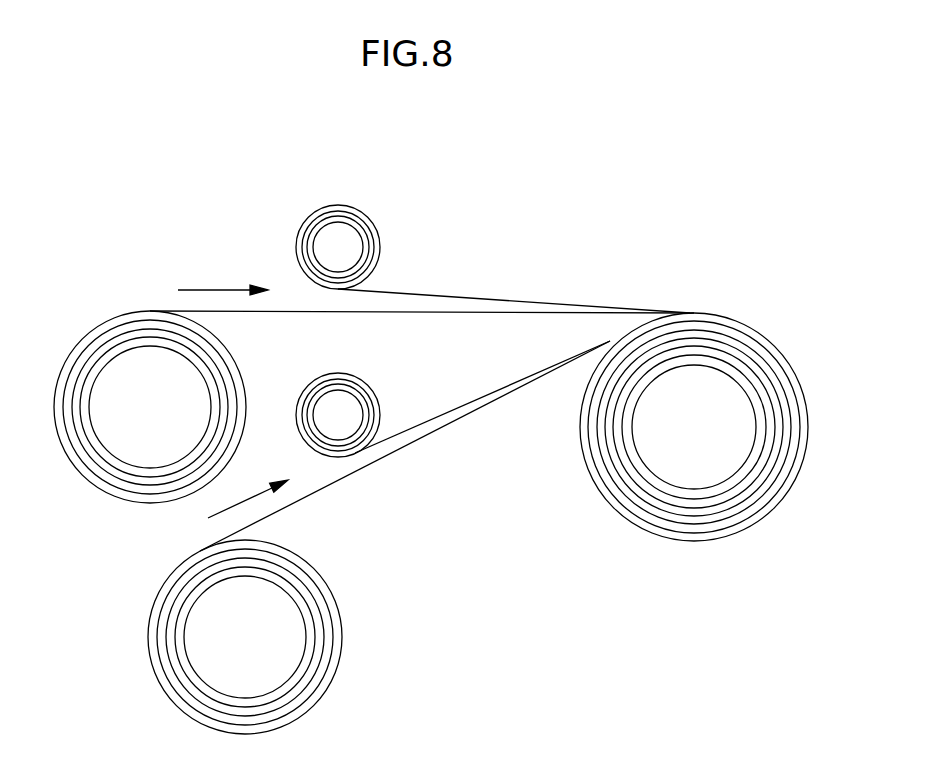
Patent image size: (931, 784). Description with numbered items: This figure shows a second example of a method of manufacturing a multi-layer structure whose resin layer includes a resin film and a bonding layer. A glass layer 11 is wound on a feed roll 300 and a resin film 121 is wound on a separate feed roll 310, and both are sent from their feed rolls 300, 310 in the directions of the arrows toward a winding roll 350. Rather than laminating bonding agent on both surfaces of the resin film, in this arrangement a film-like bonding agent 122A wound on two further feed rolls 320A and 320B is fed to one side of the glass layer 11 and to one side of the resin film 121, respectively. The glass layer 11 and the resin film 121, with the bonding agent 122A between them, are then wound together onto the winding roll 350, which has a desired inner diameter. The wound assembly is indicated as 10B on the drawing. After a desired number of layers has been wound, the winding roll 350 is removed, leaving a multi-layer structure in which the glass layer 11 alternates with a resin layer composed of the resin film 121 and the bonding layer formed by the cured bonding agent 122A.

The feed roll 300 is at (120, 433).
The feed roll 310 is at (226, 664).
The feed roll 320A is at (338, 238).
The feed roll 320B is at (338, 408).
The winding roll 350 is at (691, 465).
The electrode assembly 10B is at (592, 495).
The glass layer 11 is at (265, 313).
The resin film 121 is at (320, 491).
The bonding agent 122A is at (462, 295).